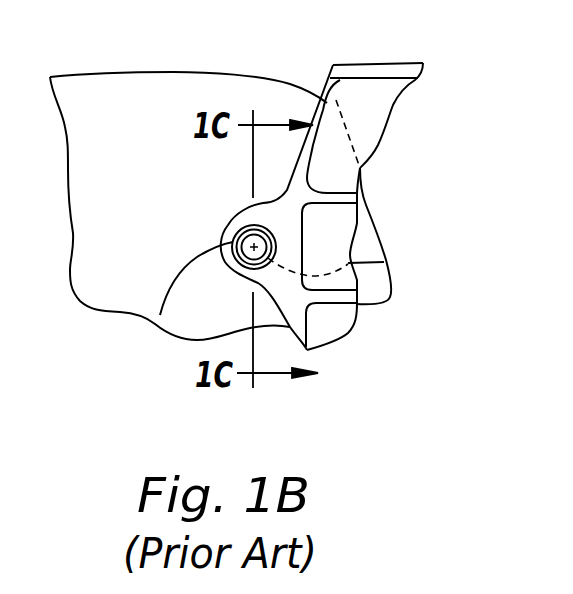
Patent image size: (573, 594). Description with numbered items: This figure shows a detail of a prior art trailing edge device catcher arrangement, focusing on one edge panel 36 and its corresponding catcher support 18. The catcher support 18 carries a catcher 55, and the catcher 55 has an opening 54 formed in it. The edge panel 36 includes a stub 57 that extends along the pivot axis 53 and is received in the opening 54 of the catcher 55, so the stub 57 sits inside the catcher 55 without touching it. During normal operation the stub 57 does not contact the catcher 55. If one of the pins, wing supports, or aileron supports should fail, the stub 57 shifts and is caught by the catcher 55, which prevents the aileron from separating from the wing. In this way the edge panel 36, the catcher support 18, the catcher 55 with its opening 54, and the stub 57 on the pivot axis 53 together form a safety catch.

The edge panel 36 is at (173, 78).
The catcher support 18 is at (380, 108).
The catcher 55 is at (360, 228).
The pivot axis 53 is at (395, 267).
The stub 57 is at (241, 274).
The opening 54 is at (160, 315).